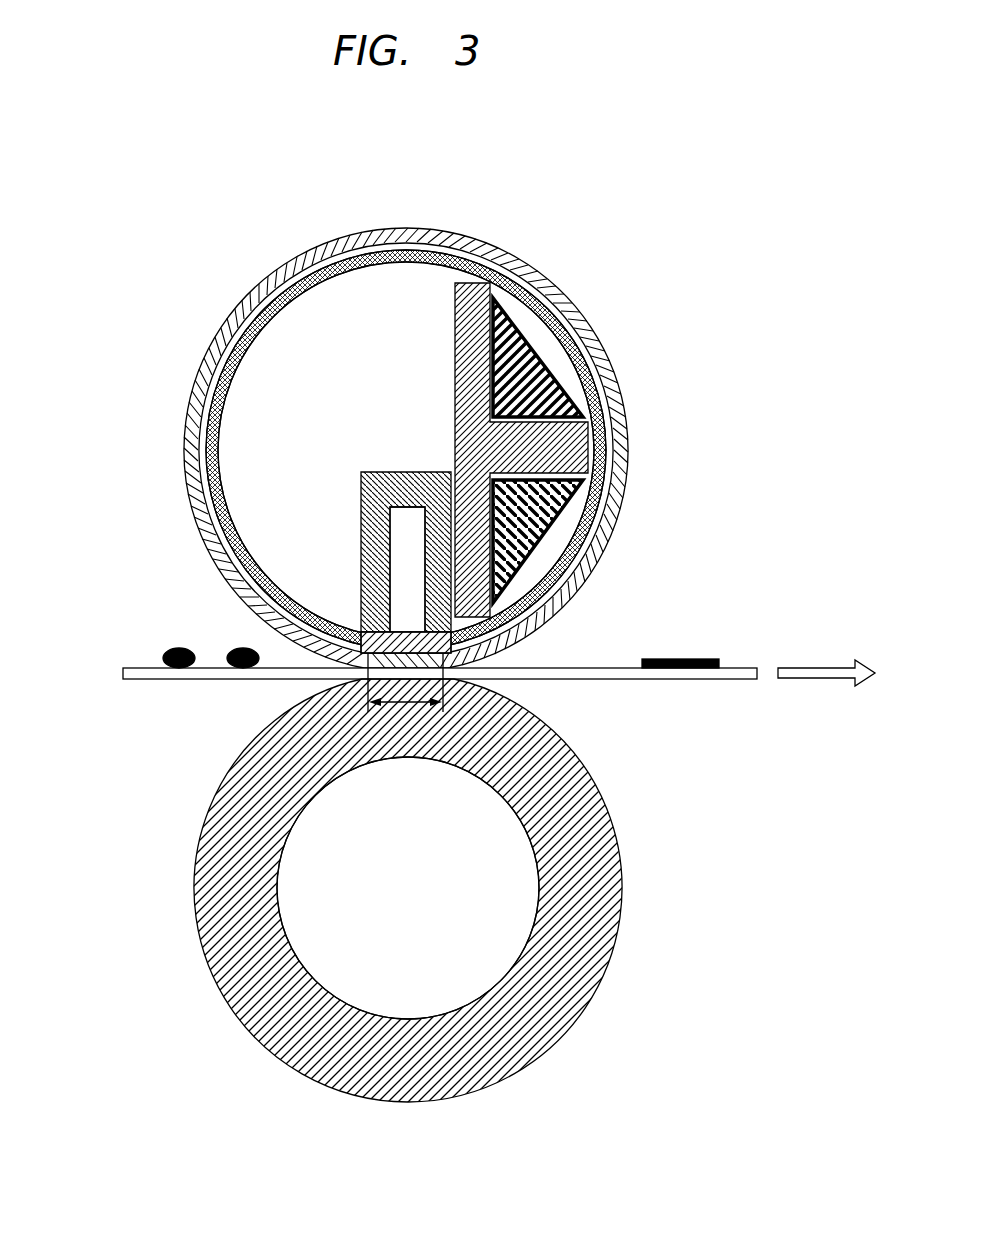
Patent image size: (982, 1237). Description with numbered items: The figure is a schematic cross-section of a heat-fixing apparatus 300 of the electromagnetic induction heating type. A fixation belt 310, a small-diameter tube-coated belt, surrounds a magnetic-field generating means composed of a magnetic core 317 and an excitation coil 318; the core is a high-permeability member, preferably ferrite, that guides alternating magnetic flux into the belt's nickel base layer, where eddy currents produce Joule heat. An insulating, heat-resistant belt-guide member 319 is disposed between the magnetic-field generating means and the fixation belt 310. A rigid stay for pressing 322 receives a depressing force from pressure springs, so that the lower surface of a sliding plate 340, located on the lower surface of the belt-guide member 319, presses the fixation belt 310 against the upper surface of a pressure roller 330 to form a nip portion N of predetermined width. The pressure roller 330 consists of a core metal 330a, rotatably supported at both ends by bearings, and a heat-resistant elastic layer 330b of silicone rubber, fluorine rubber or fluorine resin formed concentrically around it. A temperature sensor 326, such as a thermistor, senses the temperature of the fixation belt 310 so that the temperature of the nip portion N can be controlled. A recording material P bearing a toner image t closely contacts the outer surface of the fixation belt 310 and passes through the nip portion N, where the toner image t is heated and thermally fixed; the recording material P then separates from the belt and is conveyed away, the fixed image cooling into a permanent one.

The heat-fixing apparatus 300 is at (237, 207).
The fixation belt 310 is at (537, 245).
The magnetic core 317 is at (480, 447).
The excitation coil 318 is at (548, 508).
The belt-guide member 319 is at (227, 318).
The rigid stay for pressing 322 is at (362, 497).
The temperature sensor 326 is at (545, 640).
The pressure roller 330 is at (622, 968).
The core metal 330a is at (313, 853).
The heat-resistant elastic layer 330b is at (227, 967).
The sliding plate 340 is at (405, 628).
The nip portion N is at (405, 692).
The recording material P is at (608, 678).
The toner image t is at (177, 645).